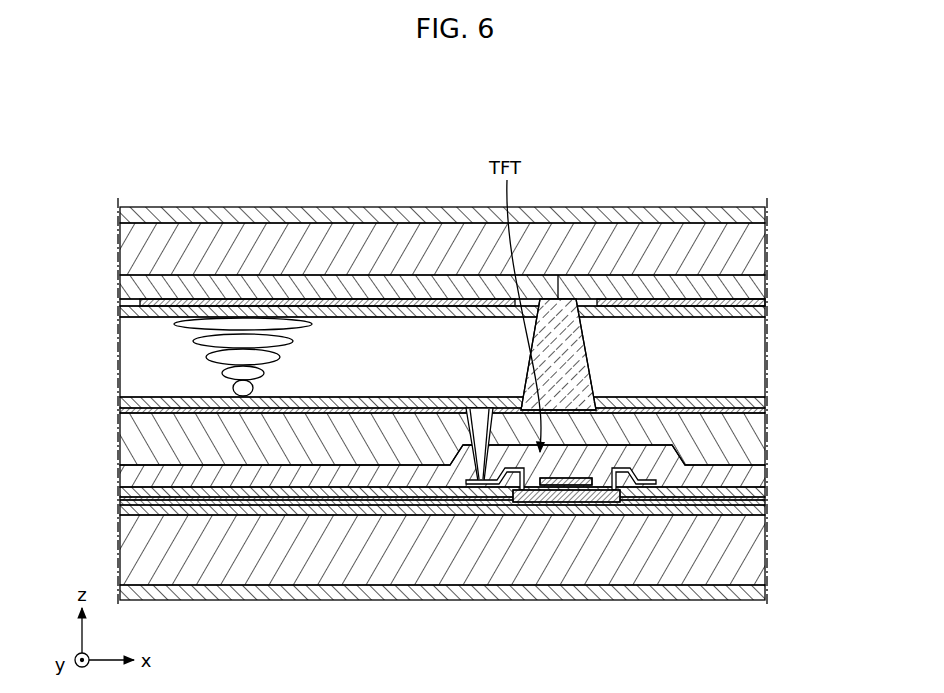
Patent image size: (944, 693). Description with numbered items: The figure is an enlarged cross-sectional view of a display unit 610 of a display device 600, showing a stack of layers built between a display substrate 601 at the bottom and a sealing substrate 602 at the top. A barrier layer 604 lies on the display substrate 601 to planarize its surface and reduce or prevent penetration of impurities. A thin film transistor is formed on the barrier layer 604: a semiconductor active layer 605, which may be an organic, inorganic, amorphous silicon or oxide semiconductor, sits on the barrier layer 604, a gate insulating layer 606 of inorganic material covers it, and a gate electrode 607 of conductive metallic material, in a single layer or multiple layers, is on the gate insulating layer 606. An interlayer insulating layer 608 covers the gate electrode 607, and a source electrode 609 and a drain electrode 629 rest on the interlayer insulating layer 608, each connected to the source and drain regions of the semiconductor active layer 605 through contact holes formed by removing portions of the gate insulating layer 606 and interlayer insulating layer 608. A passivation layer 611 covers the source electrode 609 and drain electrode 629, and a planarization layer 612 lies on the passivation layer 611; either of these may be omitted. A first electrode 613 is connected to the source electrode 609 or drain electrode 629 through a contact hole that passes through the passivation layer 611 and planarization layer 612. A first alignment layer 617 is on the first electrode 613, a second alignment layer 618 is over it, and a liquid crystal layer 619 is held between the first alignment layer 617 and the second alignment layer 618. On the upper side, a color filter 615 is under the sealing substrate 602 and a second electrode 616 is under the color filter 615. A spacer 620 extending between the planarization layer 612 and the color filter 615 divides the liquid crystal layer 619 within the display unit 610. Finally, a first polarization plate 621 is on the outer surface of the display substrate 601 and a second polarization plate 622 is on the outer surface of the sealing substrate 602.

The display device 600 is at (776, 136).
The display unit 610 is at (104, 204).
The display substrate 601 is at (752, 556).
The sealing substrate 602 is at (753, 255).
The barrier layer 604 is at (762, 506).
The semiconductor active layer 605 is at (583, 502).
The gate insulating layer 606 is at (762, 500).
The gate electrode 607 is at (552, 502).
The interlayer insulating layer 608 is at (762, 490).
The source electrode 609 is at (630, 500).
The passivation layer 611 is at (760, 475).
The planarization layer 612 is at (757, 441).
The first electrode 613 is at (762, 410).
The color filter 615 is at (425, 292).
The second electrode 616 is at (360, 301).
The first alignment layer 617 is at (762, 400).
The second alignment layer 618 is at (757, 313).
The liquid crystal layer 619 is at (148, 357).
The spacer 620 is at (568, 355).
The first polarization plate 621 is at (762, 590).
The second polarization plate 622 is at (753, 214).
The drain electrode 629 is at (497, 487).